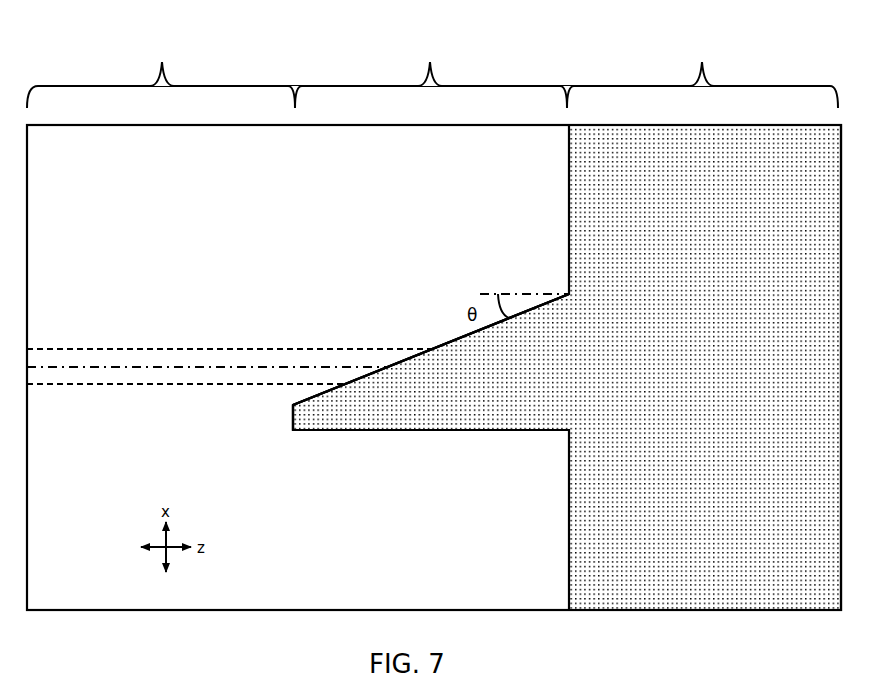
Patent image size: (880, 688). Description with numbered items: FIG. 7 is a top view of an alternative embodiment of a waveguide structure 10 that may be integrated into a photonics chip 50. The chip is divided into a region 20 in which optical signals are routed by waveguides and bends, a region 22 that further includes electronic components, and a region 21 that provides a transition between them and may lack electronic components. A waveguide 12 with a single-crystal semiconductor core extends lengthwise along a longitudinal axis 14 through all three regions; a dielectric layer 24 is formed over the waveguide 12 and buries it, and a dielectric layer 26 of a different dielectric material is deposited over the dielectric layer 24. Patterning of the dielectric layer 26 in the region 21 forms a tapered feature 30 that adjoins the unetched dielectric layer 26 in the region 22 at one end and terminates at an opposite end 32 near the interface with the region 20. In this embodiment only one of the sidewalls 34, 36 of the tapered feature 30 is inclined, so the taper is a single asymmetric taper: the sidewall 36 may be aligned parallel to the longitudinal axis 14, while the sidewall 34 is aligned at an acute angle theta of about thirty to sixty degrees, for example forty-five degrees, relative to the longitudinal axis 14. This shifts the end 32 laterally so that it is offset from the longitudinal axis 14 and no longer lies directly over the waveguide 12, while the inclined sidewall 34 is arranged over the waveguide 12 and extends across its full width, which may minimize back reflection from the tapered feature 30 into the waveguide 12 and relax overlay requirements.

The photonics chip 50 is at (110, 71).
The region 20 is at (161, 72).
The region 21 is at (431, 72).
The region 22 is at (702, 72).
The waveguide structure 10 is at (160, 214).
The waveguide 12 is at (100, 378).
The longitudinal axis 14 is at (55, 370).
The dielectric layer 24 is at (86, 555).
The dielectric layer 26 is at (601, 226).
The tapered feature 30 is at (350, 431).
The terminating end 32 is at (293, 426).
The sidewall 34 is at (443, 345).
The sidewall 36 is at (475, 431).